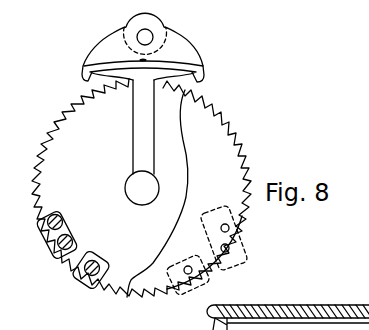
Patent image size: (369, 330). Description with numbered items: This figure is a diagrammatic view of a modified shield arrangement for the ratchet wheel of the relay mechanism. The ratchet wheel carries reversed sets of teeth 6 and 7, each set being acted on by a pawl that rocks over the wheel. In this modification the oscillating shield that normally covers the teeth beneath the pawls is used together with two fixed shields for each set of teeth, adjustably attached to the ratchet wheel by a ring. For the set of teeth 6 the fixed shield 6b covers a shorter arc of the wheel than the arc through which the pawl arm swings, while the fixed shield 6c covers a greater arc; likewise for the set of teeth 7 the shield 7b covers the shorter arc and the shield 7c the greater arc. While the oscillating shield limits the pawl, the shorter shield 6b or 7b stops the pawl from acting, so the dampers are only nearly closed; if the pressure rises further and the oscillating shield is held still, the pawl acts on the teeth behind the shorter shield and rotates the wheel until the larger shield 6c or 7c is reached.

The set of teeth 6 is at (37, 176).
The fixed shield 6b is at (102, 253).
The fixed shield 6c is at (75, 232).
The set of teeth 7 is at (241, 173).
The fixed shield 7b is at (179, 265).
The fixed shield 7c is at (208, 226).